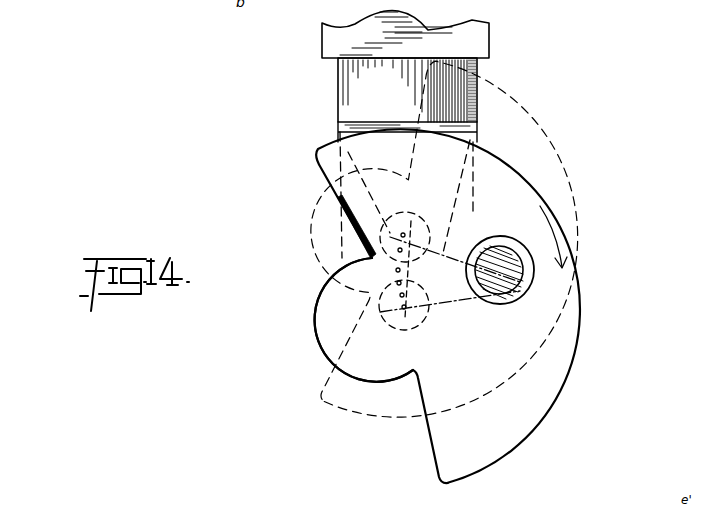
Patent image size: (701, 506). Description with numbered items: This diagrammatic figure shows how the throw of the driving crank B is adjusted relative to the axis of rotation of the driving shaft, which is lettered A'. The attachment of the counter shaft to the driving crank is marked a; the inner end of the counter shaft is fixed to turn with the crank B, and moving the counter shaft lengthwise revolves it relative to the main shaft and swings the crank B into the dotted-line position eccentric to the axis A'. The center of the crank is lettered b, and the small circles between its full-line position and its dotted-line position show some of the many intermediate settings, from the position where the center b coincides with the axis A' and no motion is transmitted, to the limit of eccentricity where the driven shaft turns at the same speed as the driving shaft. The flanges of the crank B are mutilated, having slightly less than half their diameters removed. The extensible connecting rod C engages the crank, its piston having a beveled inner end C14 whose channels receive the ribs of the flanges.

The driving crank B is at (548, 372).
The extensible connecting rod C is at (357, 90).
The beveled inner end of piston C14 is at (352, 233).
The center of driving crank b is at (392, 236).
The counter shaft attachment a is at (521, 291).
The axis of rotation of the driving shaft A' is at (353, 320).